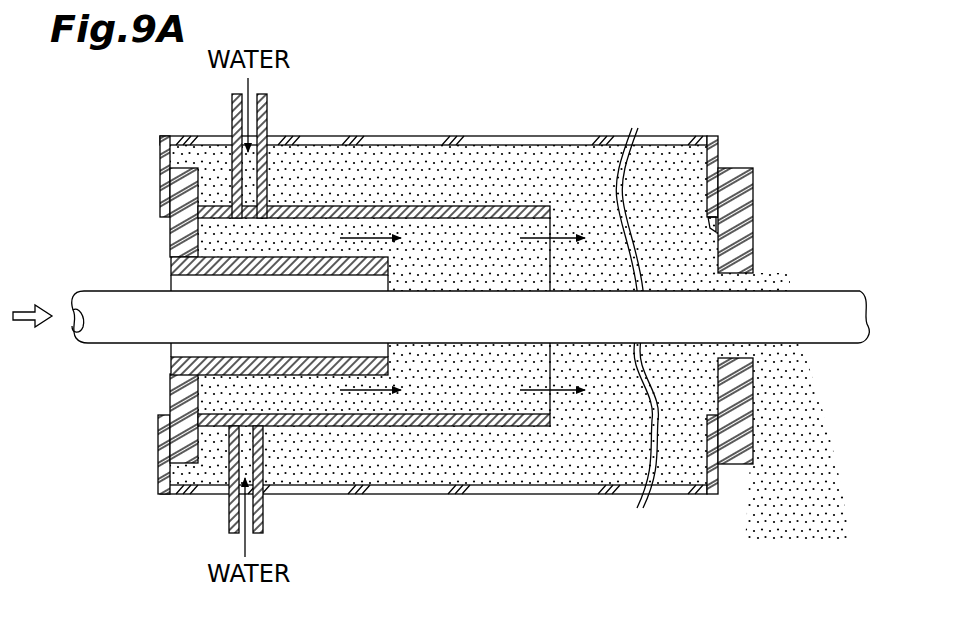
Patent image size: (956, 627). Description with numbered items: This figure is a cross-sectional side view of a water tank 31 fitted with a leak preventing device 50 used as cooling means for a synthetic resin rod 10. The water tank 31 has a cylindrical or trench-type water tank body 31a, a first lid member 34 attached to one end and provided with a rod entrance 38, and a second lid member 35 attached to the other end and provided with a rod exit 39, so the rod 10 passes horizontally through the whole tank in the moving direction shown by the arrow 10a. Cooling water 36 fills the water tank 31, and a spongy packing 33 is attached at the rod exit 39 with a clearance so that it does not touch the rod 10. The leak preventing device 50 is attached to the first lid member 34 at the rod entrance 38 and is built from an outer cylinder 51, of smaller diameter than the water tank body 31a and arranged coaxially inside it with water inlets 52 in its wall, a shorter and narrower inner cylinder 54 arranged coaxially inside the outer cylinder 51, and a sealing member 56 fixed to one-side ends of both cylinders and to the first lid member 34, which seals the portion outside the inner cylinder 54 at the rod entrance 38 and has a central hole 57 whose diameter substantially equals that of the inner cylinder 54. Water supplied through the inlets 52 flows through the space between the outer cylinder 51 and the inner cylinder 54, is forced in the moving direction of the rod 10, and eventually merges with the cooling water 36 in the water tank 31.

The rod 10 is at (100, 336).
The arrow indicating moving direction of the rod 10a is at (27, 308).
The water tank 31 is at (517, 132).
The water tank body 31a is at (615, 140).
The spongy packing 33 is at (748, 253).
The first lid member 34 is at (160, 473).
The second lid member 35 is at (722, 140).
The cooling water 36 is at (583, 457).
The rod entrance 38 is at (165, 422).
The rod exit 39 is at (718, 232).
The leak preventing device 50 is at (374, 235).
The outer cylinder 51 is at (426, 207).
The water inlet 52 is at (267, 127).
The inner cylinder 54 is at (327, 362).
The sealing member 56 is at (170, 232).
The hole 57 is at (170, 271).